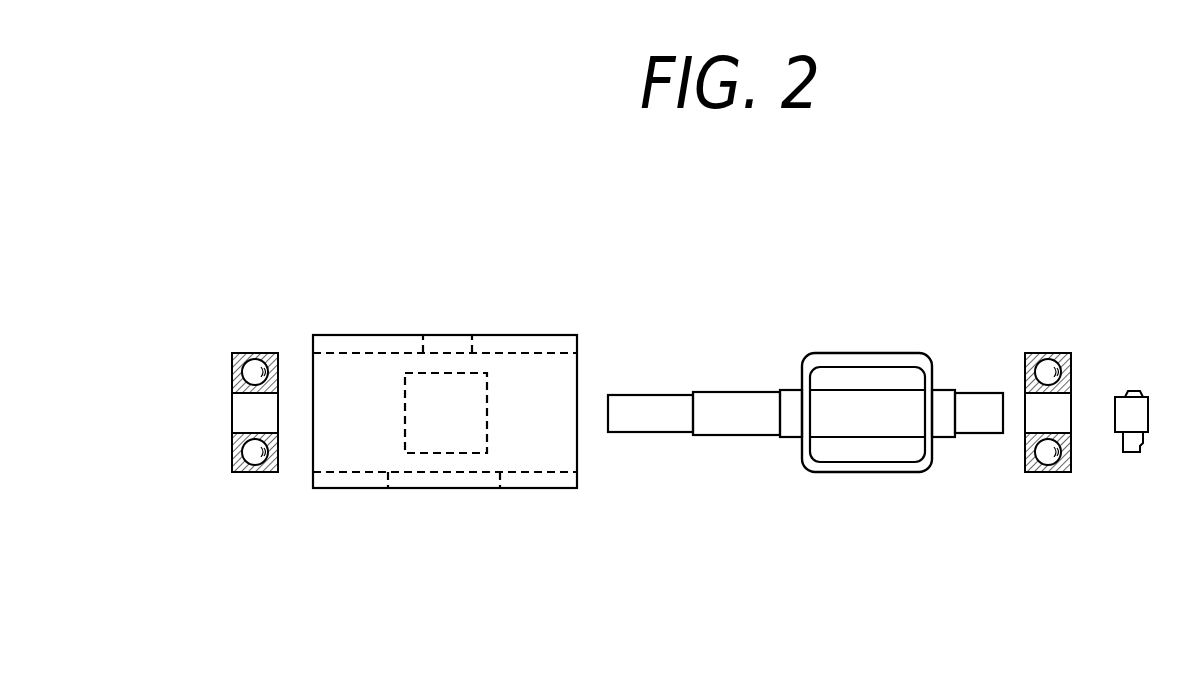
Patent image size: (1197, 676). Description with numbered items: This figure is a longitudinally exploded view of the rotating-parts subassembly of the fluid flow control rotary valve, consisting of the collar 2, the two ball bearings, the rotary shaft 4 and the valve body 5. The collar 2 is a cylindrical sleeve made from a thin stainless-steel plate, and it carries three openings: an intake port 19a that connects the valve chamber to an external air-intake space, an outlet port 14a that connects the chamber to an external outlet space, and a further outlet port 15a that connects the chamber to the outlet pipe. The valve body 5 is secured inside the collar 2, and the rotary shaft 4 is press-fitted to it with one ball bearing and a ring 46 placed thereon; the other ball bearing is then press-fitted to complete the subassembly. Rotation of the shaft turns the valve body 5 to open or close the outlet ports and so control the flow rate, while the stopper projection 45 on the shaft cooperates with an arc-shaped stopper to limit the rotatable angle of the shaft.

The collar 2 is at (515, 373).
The rotary shaft 4 is at (715, 405).
The valve body 5 is at (882, 360).
The outlet port 14a is at (452, 485).
The outlet port 15a is at (445, 345).
The intake port 19a is at (467, 443).
The stopper projection 45 is at (1135, 438).
The ring 46 is at (1132, 408).